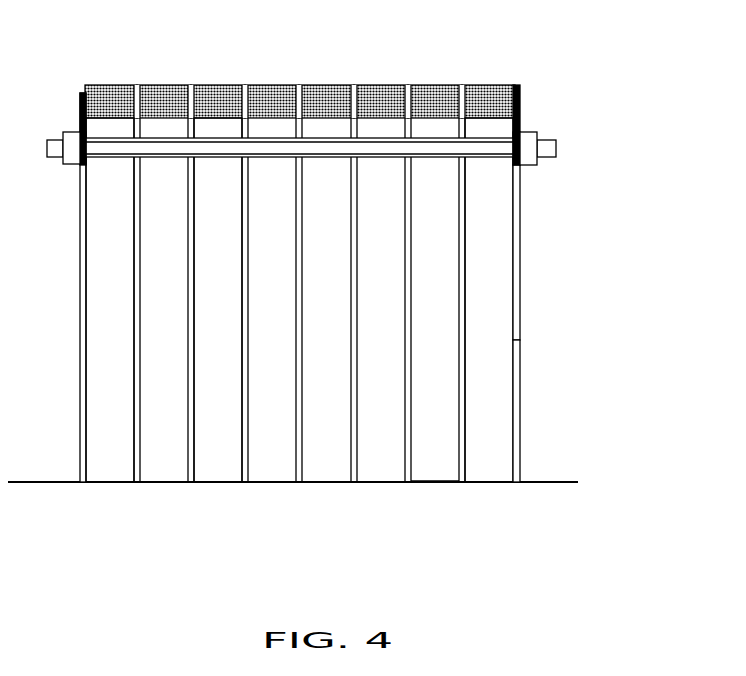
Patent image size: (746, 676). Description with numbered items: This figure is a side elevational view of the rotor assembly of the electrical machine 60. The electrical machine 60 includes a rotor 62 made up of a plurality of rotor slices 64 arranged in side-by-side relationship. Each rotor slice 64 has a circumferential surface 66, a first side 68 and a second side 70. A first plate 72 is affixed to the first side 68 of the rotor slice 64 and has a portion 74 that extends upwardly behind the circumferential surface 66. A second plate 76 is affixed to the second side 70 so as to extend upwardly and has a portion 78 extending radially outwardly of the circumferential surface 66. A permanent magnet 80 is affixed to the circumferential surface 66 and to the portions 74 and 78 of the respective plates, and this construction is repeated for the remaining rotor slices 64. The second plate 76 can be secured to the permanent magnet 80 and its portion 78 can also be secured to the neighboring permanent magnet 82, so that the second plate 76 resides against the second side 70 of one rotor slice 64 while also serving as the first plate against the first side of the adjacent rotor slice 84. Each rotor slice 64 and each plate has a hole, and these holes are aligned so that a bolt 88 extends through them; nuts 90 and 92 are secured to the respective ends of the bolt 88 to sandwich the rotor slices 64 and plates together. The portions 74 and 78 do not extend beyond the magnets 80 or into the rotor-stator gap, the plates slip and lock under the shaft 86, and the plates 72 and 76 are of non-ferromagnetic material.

The electrical machine 60 is at (641, 289).
The rotor 62 is at (540, 411).
The rotor slice 64 is at (102, 323).
The circumferential surface 66 is at (497, 203).
The first side 68 is at (516, 361).
The second side 70 is at (463, 452).
The first plate 72 is at (518, 232).
The portion of first plate 74 is at (520, 97).
The second plate 76 is at (458, 333).
The portion of second plate 78 is at (462, 84).
The permanent magnet 80 is at (165, 85).
The permanent magnet 82 is at (430, 84).
The rotor slice 84 is at (425, 472).
The shaft 86 is at (508, 482).
The bolt 88 is at (107, 150).
The nut 90 is at (72, 131).
The nut 92 is at (530, 133).